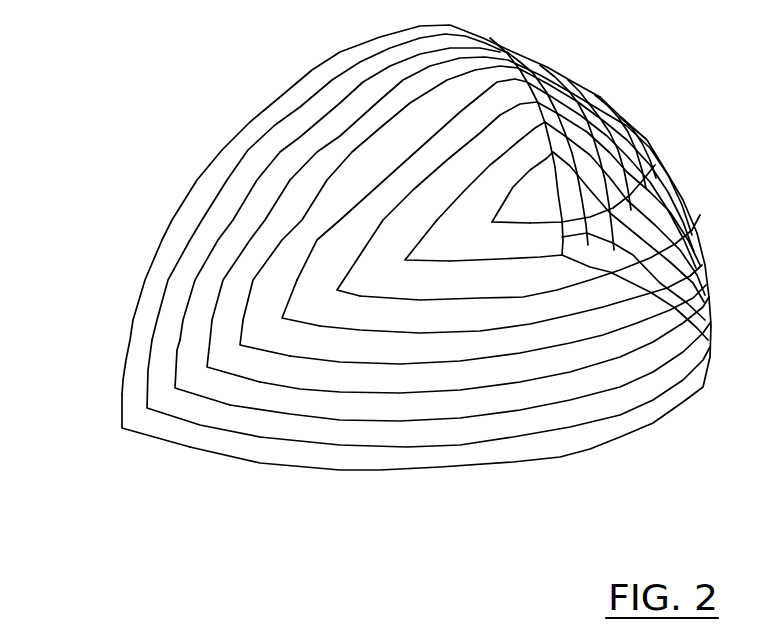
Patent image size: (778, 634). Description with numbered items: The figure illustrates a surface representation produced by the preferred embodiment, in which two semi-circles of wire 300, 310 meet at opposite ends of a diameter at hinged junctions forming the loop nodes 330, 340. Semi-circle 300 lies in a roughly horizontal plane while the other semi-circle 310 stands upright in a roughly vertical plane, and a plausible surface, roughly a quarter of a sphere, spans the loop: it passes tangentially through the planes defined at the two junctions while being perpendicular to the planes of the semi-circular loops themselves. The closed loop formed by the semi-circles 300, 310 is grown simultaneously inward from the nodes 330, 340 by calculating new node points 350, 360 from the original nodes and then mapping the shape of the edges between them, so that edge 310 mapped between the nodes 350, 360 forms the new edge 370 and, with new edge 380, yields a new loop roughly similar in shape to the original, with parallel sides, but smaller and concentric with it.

The semi-circle of wire 300 is at (513, 462).
The semi-circle of wire 310 is at (312, 70).
The node 330 is at (122, 428).
The node 340 is at (562, 257).
The new node point 350 is at (143, 408).
The new node point 360 is at (562, 237).
The new edge 370 is at (252, 155).
The new edge 380 is at (405, 447).